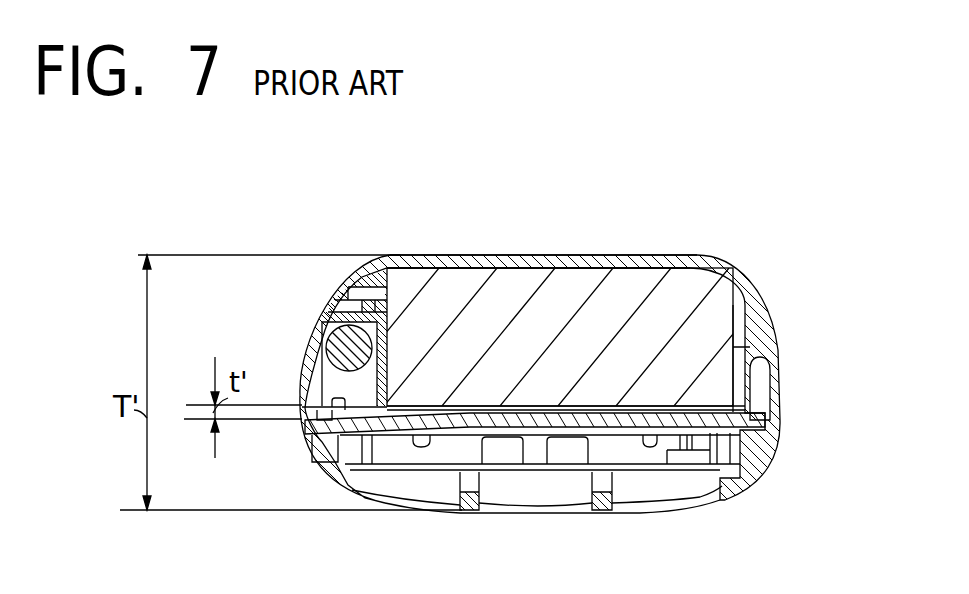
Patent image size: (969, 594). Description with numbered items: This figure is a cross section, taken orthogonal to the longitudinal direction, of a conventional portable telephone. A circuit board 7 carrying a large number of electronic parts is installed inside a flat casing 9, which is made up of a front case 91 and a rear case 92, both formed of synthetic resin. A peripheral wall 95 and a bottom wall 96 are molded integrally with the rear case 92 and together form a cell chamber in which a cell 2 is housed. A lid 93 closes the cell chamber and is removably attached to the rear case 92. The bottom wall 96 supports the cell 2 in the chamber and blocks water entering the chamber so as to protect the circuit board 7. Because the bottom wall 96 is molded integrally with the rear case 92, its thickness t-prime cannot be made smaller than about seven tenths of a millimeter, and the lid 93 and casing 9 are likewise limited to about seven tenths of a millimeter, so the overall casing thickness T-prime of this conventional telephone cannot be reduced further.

The cell 2 is at (577, 275).
The circuit board 7 is at (459, 425).
The casing 9 is at (837, 385).
The front case 91 is at (768, 461).
The rear case 92 is at (773, 368).
The lid 93 is at (502, 258).
The peripheral wall 95 is at (388, 373).
The bottom wall 96 is at (631, 406).